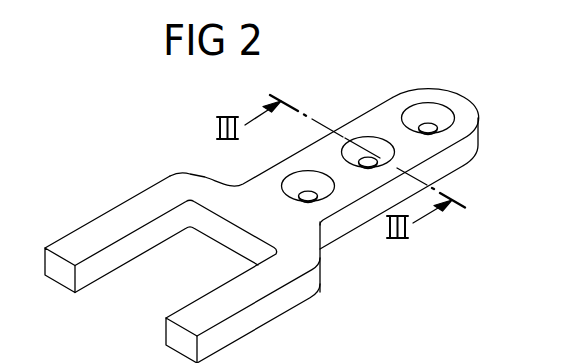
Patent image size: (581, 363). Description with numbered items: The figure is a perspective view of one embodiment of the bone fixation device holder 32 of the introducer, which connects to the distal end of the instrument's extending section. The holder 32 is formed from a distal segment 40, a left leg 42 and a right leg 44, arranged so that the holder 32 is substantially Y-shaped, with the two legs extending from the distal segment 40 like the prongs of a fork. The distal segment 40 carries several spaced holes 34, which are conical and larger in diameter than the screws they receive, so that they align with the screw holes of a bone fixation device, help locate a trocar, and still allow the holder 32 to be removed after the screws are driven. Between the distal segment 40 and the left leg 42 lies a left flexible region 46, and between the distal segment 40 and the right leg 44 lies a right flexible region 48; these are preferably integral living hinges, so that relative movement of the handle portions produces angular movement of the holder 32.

The bone fixation device holder 32 is at (284, 206).
The holes 34 is at (433, 112).
The distal segment 40 is at (378, 125).
The left leg 42 is at (100, 235).
The right leg 44 is at (205, 313).
The left flexible region 46 is at (213, 192).
The right flexible region 48 is at (326, 237).